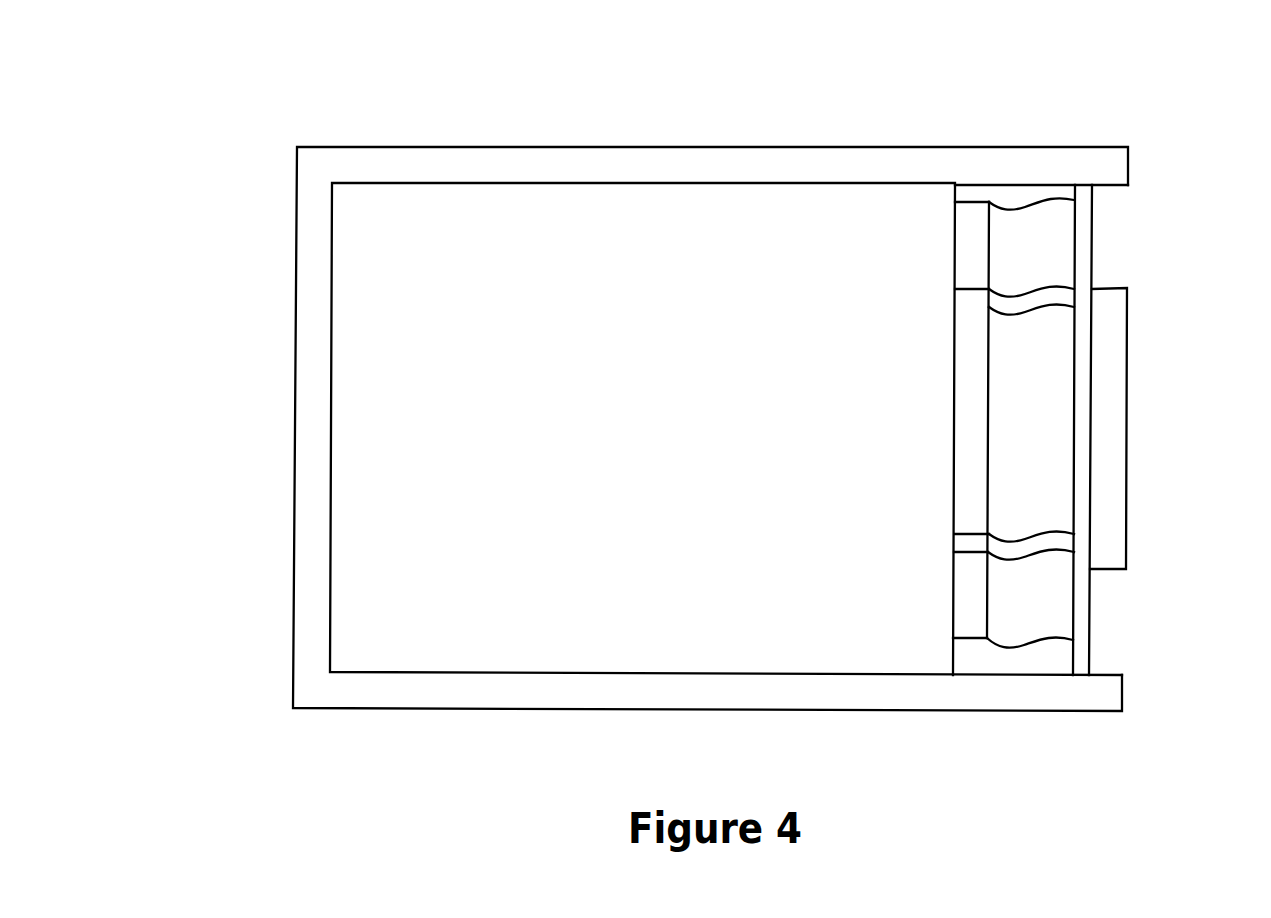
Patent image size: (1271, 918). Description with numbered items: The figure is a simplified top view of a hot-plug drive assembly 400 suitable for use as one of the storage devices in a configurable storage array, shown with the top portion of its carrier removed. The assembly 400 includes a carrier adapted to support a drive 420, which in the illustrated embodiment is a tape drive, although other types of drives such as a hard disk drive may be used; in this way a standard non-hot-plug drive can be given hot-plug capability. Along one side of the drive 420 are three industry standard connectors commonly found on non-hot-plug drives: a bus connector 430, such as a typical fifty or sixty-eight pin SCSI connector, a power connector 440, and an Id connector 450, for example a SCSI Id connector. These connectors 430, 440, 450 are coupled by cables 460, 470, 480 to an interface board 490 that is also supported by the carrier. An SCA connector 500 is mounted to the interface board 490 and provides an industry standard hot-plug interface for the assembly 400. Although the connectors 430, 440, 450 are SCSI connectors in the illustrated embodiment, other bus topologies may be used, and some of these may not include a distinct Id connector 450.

The hot-plug drive assembly 400 is at (204, 109).
The drive 420 is at (367, 322).
The bus connector 430 is at (962, 396).
The power connector 440 is at (962, 252).
The Id connector 450 is at (958, 604).
The cable 460 is at (1055, 430).
The cable 470 is at (1058, 253).
The cable 480 is at (1055, 622).
The interface board 490 is at (1079, 657).
The SCA connector 500 is at (1107, 498).